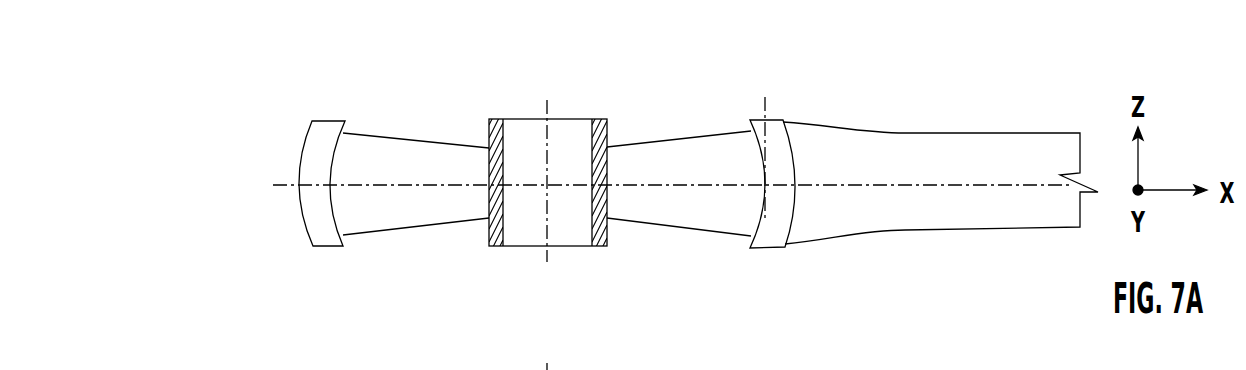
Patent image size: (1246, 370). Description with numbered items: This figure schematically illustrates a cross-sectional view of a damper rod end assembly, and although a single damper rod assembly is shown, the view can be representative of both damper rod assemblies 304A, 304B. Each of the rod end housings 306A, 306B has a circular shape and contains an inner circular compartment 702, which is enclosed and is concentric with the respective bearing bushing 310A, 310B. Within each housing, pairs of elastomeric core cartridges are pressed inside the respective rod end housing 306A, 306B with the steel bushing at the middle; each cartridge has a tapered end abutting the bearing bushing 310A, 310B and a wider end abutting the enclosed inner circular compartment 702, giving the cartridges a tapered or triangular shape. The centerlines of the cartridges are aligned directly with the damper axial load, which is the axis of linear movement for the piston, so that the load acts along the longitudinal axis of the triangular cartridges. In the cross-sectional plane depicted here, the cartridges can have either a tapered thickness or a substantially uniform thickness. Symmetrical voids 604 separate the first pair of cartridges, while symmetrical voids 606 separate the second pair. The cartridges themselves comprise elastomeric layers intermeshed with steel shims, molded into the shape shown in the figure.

The damper rod assembly 304A is at (176, 180).
The damper rod assembly 304B is at (240, 210).
The rod end housing 306A is at (281, 147).
The rod end housing 306B is at (305, 142).
The bearing bushing 310A is at (461, 191).
The bearing bushing 310B is at (488, 193).
The inner circular compartment 702 is at (738, 123).
The symmetrical voids 604 is at (647, 363).
The symmetrical voids 606 is at (647, 363).